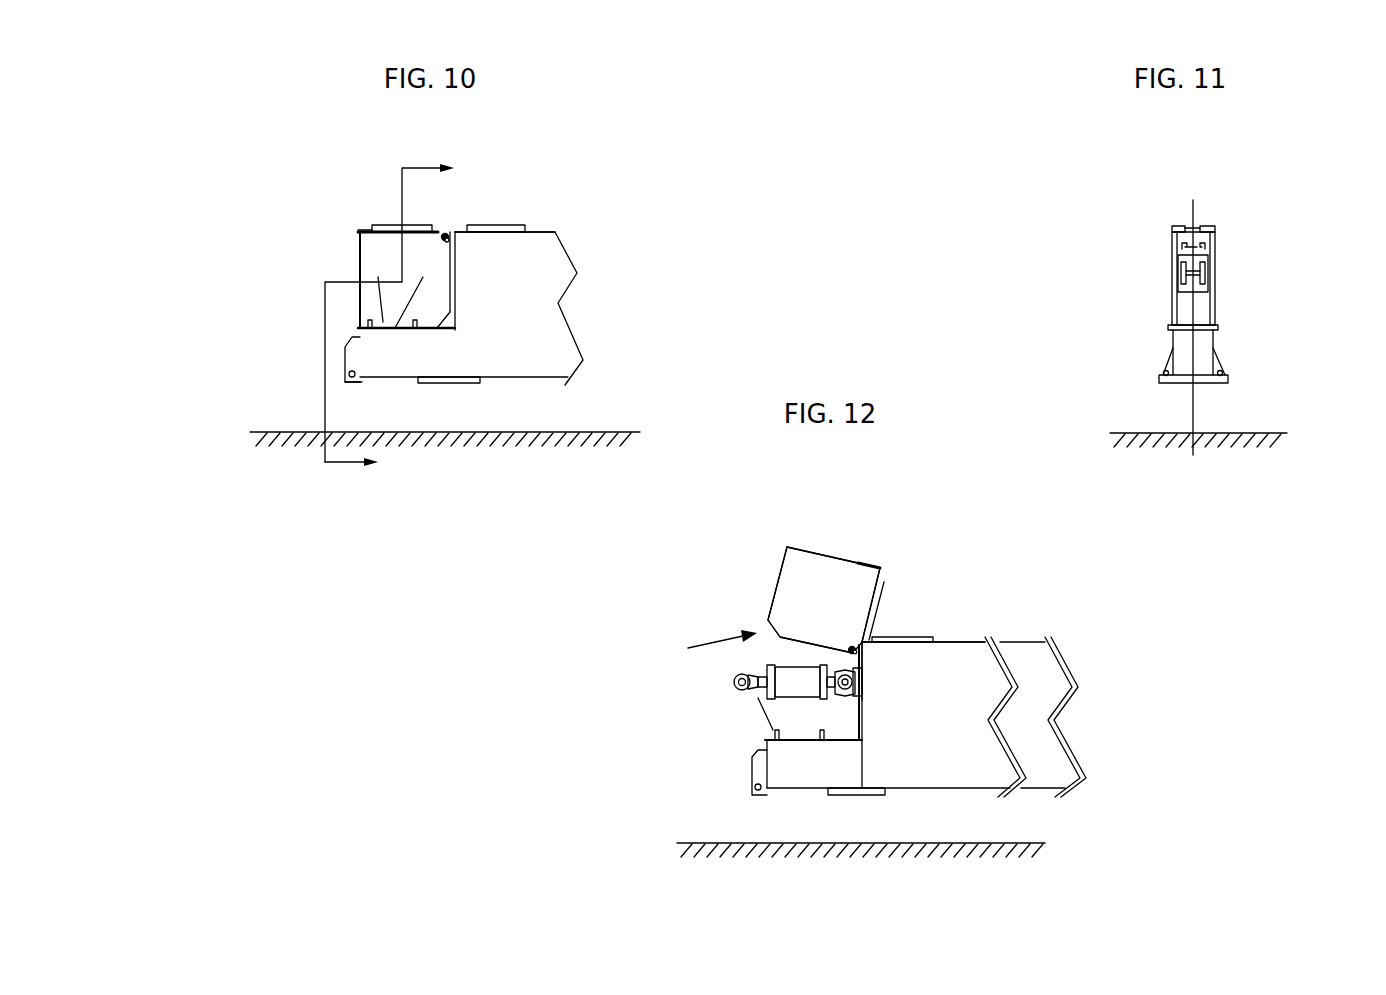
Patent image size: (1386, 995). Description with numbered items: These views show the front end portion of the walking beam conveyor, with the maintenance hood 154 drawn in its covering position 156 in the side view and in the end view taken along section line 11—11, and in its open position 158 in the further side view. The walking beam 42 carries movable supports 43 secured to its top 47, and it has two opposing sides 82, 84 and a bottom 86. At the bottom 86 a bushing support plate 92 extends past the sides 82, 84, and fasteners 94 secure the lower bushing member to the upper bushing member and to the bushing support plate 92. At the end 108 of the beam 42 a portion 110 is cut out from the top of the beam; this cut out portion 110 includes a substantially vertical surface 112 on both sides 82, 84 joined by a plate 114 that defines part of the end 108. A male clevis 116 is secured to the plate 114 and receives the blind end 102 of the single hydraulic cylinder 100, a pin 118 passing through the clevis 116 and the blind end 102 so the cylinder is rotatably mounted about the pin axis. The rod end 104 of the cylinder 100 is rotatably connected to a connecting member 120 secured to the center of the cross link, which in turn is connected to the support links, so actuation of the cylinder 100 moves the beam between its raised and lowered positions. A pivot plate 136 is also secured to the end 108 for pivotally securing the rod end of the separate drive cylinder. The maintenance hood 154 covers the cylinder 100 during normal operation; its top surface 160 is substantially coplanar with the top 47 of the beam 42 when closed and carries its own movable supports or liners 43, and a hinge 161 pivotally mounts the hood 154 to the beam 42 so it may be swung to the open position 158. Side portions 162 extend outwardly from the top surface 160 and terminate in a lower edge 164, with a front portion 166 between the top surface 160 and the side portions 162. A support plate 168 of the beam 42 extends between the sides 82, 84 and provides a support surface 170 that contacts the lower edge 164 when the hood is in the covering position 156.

In FIG. 10, the section line 11— 11 is at (389, 322).
In FIG. 10, the walking beam 42 is at (580, 270).
In FIG. 11, the walking beam 42 is at (1215, 250).
In FIG. 12, the walking beam 42 is at (980, 682).
In FIG. 10, the movable supports 43 is at (395, 223).
In FIG. 11, the movable supports 43 is at (1187, 227).
In FIG. 12, the movable supports 43 is at (882, 610).
In FIG. 10, the top of the beam 47 is at (540, 230).
In FIG. 12, the top of the beam 47 is at (1024, 623).
In FIG. 11, the side of the walking beam 82 is at (1215, 338).
In FIG. 12, the side of the walking beam 82 is at (910, 767).
In FIG. 11, the other side of the walking beam 84 is at (1172, 340).
In FIG. 12, the other side of the walking beam 84 is at (1068, 748).
In FIG. 11, the bottom of the beam 86 is at (1202, 385).
In FIG. 11, the bushing support plate 92 is at (1165, 387).
In FIG. 11, the fasteners 94 is at (1160, 377).
In FIG. 12, the hydraulic cylinder 100 is at (765, 742).
In FIG. 12, the blind end 102 is at (845, 692).
In FIG. 12, the rod end 104 is at (740, 682).
In FIG. 10, the end of the beam 108 is at (358, 357).
In FIG. 10, the cut out portion 110 is at (457, 280).
In FIG. 12, the cut out portion 110 is at (820, 720).
In FIG. 12, the vertical surface 112 is at (968, 805).
In FIG. 12, the plate 114 is at (942, 779).
In FIG. 12, the male clevis 116 is at (848, 693).
In FIG. 12, the pin 118 is at (846, 695).
In FIG. 10, the connecting member 120 is at (378, 277).
In FIG. 10, the pivot plate 136 is at (363, 380).
In FIG. 10, the maintenance hood 154 is at (373, 293).
In FIG. 11, the maintenance hood 154 is at (1178, 247).
In FIG. 12, the maintenance hood 154 is at (782, 567).
In FIG. 10, the covering position 156 is at (378, 257).
In FIG. 12, the open position 158 is at (697, 645).
In FIG. 10, the top surface 160 is at (362, 228).
In FIG. 11, the top surface 160 is at (1193, 227).
In FIG. 12, the top surface 160 is at (883, 572).
In FIG. 10, the hinge 161 is at (447, 235).
In FIG. 12, the hinge 161 is at (850, 648).
In FIG. 11, the side portions 162 is at (1215, 302).
In FIG. 12, the side portions 162 is at (790, 600).
In FIG. 10, the lower edge 164 is at (423, 277).
In FIG. 11, the lower edge 164 is at (1172, 310).
In FIG. 12, the lower edge 164 is at (768, 607).
In FIG. 10, the front portion 166 is at (371, 262).
In FIG. 11, the front portion 166 is at (1183, 303).
In FIG. 12, the front portion 166 is at (832, 555).
In FIG. 10, the support plate 168 is at (360, 328).
In FIG. 12, the support plate 168 is at (703, 784).
In FIG. 12, the support surface 170 is at (758, 698).